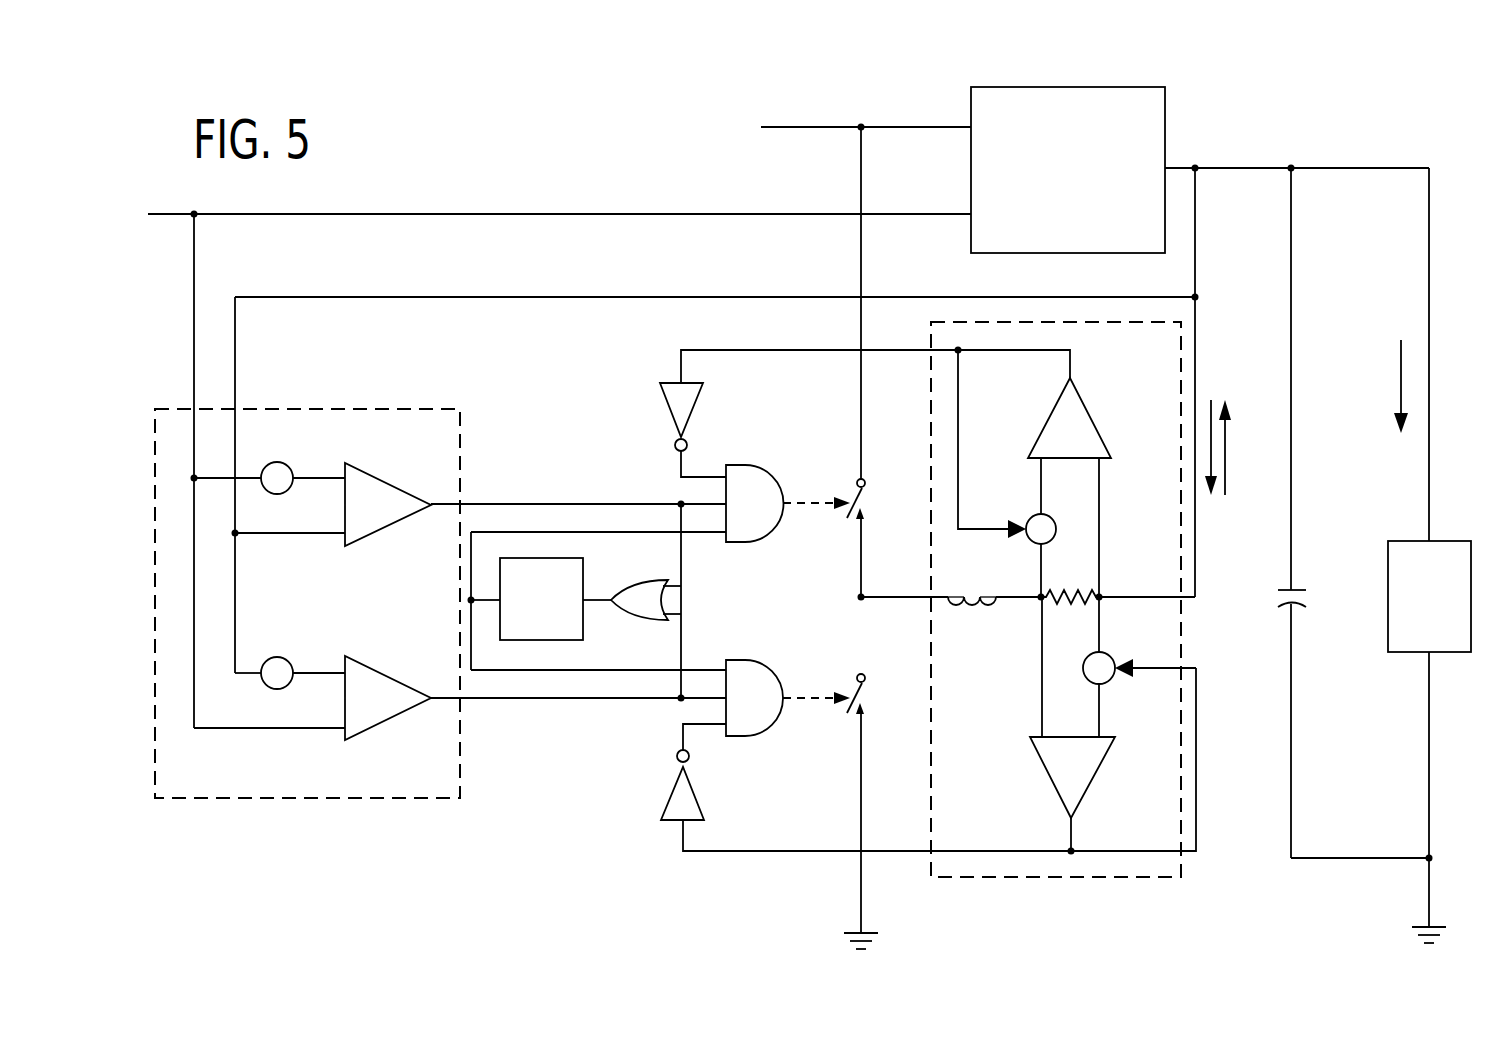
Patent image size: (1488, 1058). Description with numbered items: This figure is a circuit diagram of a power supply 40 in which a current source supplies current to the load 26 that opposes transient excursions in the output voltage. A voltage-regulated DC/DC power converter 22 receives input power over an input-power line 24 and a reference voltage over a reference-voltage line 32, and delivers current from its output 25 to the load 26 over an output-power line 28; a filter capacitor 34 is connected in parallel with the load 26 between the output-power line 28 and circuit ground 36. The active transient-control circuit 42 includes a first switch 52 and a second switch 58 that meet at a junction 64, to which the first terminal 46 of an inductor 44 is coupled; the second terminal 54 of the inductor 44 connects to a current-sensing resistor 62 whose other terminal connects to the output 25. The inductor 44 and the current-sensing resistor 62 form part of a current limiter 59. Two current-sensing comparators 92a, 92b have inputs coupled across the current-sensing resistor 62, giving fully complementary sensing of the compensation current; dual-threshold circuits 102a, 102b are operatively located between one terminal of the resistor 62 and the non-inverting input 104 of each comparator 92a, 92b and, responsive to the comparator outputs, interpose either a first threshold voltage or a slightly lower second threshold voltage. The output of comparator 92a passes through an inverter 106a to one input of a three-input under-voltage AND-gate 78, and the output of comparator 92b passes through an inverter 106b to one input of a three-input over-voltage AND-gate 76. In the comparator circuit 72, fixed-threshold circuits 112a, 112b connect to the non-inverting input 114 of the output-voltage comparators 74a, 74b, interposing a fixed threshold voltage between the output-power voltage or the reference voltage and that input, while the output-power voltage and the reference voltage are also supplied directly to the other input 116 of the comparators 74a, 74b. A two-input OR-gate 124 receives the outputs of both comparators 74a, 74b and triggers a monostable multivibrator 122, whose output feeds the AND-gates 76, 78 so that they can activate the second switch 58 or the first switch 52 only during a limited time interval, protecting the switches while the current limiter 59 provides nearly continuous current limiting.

The DC/DC power converter 22 is at (1010, 120).
The input-power line 24 is at (815, 128).
The output 25 is at (1168, 168).
The load 26 is at (1428, 579).
The output-power line 28 is at (1395, 170).
The reference-voltage line 32 is at (614, 214).
The filter capacitor 34 is at (1286, 597).
The circuit ground 36 is at (1428, 928).
The power supply 40 is at (440, 196).
The active transient-control circuit 42 is at (244, 902).
The inductor 44 is at (965, 604).
The first terminal 46 is at (1000, 599).
The first switch 52 is at (853, 500).
The second terminal 54 is at (950, 595).
The second switch 58 is at (855, 690).
The current limiter 59 is at (1062, 880).
The current-sensing resistor 62 is at (1068, 596).
The junction 64 is at (860, 592).
The comparator circuit 72 is at (278, 800).
The output-voltage comparator 74a is at (365, 490).
The output-voltage comparator 74b is at (365, 715).
The over-voltage AND-gate 76 is at (758, 680).
The under-voltage AND-gate 78 is at (758, 480).
The current-sensing comparator 92a is at (1072, 410).
The current-sensing comparator 92b is at (1078, 785).
The dual-threshold circuit 102a is at (1032, 515).
The dual-threshold circuit 102b is at (1110, 655).
The non-inverting input 104 is at (1040, 468).
The inverter 106a is at (690, 400).
The inverter 106b is at (690, 797).
The fixed-threshold circuit 112a is at (283, 463).
The fixed-threshold circuit 112b is at (285, 657).
The non-inverting input 114 is at (345, 486).
The inverting input 116 is at (347, 546).
The monostable multivibrator 122 is at (557, 615).
The OR-gate 124 is at (650, 600).